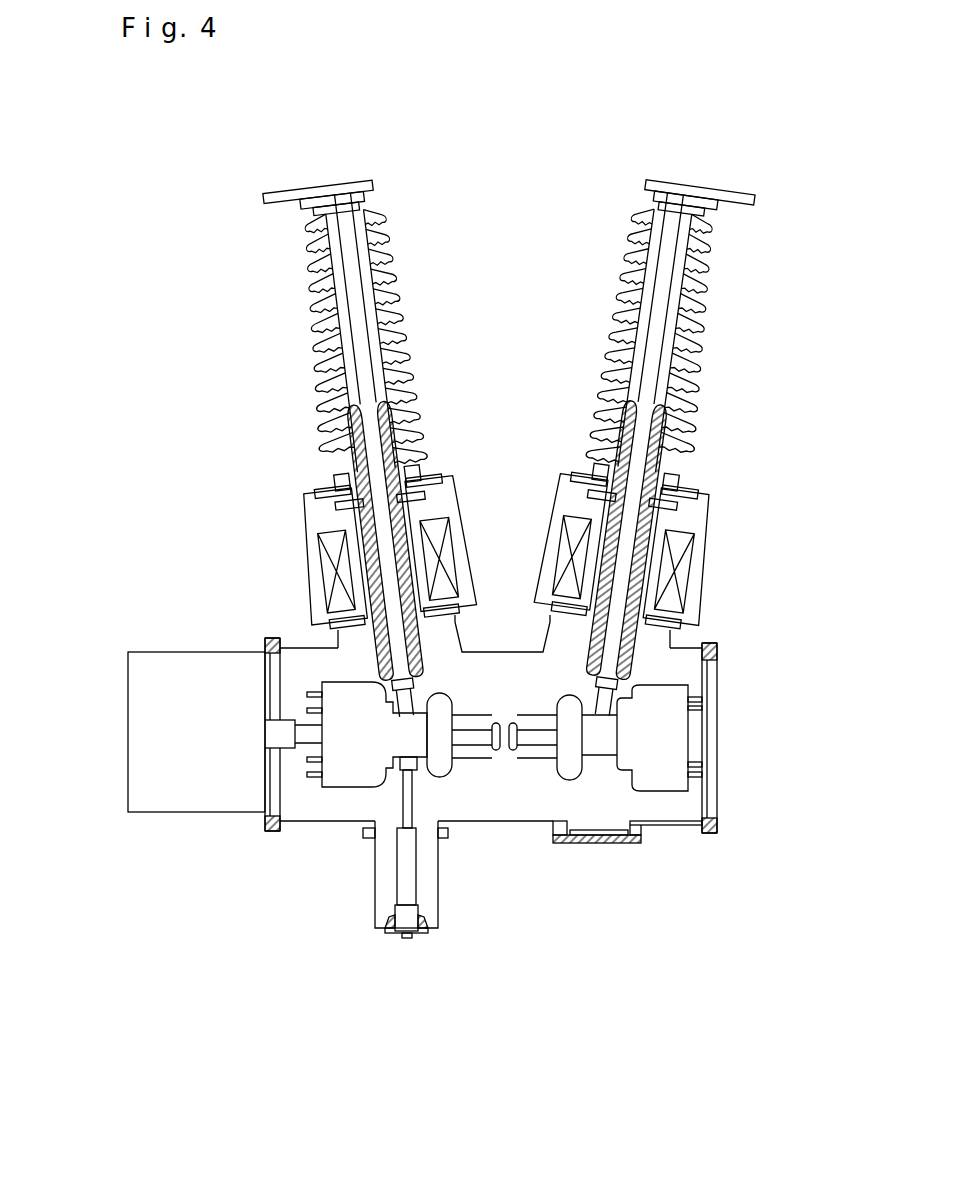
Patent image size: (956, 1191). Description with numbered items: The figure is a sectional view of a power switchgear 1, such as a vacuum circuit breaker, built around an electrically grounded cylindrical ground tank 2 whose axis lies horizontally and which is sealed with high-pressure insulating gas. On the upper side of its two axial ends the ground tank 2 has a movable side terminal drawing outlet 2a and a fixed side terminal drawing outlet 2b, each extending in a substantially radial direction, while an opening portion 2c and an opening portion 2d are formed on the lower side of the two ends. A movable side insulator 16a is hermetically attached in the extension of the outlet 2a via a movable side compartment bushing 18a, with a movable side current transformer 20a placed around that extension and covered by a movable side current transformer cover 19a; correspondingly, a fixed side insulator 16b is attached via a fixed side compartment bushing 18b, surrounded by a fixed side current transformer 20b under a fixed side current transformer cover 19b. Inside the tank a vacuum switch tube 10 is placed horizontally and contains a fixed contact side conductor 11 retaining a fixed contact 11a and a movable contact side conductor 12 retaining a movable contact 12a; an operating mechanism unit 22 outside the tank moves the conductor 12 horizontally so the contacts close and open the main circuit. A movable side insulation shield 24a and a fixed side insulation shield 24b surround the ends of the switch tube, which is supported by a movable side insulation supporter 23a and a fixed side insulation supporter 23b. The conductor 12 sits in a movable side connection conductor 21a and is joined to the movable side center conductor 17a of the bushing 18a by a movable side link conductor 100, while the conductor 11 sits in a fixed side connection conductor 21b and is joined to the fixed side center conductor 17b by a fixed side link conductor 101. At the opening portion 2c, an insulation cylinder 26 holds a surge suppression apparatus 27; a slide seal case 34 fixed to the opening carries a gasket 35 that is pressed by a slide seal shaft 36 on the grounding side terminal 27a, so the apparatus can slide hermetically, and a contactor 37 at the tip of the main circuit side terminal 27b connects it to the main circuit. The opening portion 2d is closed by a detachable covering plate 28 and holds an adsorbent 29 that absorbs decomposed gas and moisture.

The power switchgear 1 is at (442, 576).
The ground tank 2 is at (500, 650).
The movable side terminal drawing outlet 2a is at (350, 553).
The fixed side terminal drawing outlet 2b is at (663, 525).
The opening portion 2c is at (387, 820).
The opening portion 2d is at (638, 829).
The vacuum switch tube 10 is at (507, 715).
The fixed contact side conductor 11 is at (538, 745).
The fixed contact 11a is at (512, 720).
The movable contact side conductor 12 is at (477, 745).
The movable contact 12a is at (495, 722).
The movable side insulator 16a is at (307, 270).
The fixed side insulator 16b is at (707, 252).
The movable side center conductor 17a is at (355, 318).
The fixed side center conductor 17b is at (665, 322).
The movable side compartment bushing 18a is at (360, 458).
The fixed side compartment bushing 18b is at (668, 437).
The movable side current transformer cover 19a is at (330, 510).
The fixed side current transformer cover 19b is at (700, 508).
The movable side current transformer 20a is at (330, 578).
The fixed side current transformer 20b is at (687, 580).
The movable side connection conductor 21a is at (410, 728).
The fixed side connection conductor 21b is at (602, 748).
The operating mechanism unit 22 is at (190, 793).
The movable side insulation supporter 23a is at (358, 758).
The fixed side insulation supporter 23b is at (677, 700).
The movable side insulation shield 24a is at (440, 747).
The fixed side insulation shield 24b is at (572, 738).
The insulation cylinder 26 is at (440, 892).
The surge suppression apparatus 27 is at (413, 868).
The grounding side terminal 27a is at (406, 938).
The main circuit side terminal 27b is at (407, 790).
The covering plate 28 is at (603, 845).
The adsorbent 29 is at (600, 830).
The slide seal case 34 is at (427, 932).
The gasket 35 is at (388, 925).
The slide seal shaft 36 is at (418, 932).
The contactor 37 is at (420, 768).
The movable side link conductor 100 is at (417, 700).
The fixed side link conductor 101 is at (598, 703).